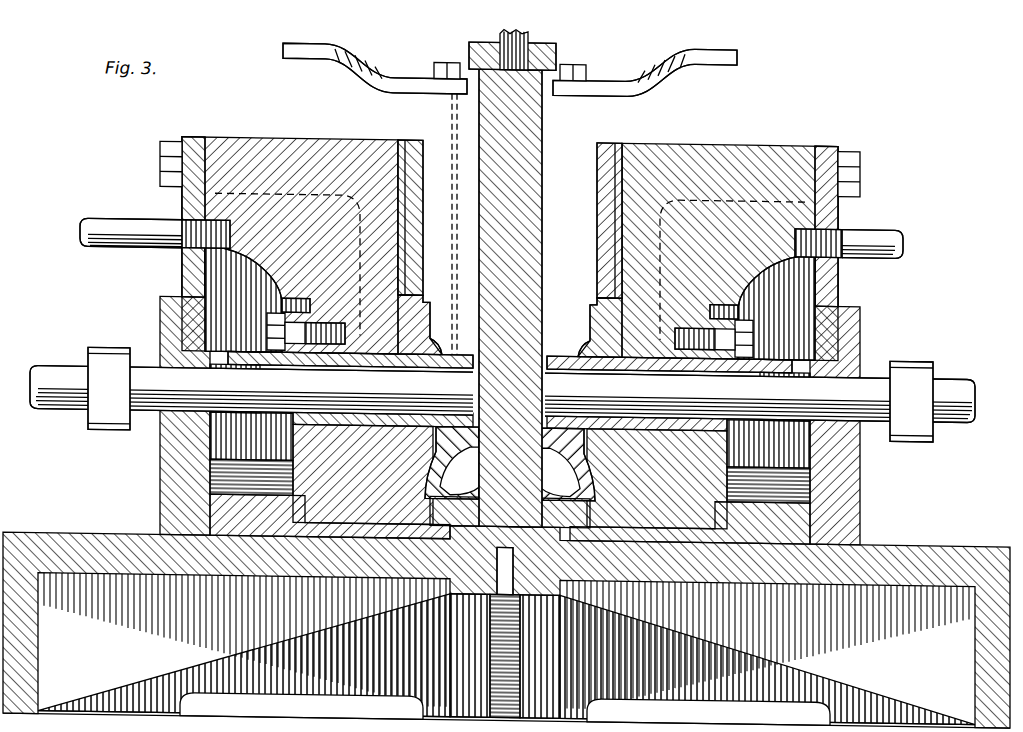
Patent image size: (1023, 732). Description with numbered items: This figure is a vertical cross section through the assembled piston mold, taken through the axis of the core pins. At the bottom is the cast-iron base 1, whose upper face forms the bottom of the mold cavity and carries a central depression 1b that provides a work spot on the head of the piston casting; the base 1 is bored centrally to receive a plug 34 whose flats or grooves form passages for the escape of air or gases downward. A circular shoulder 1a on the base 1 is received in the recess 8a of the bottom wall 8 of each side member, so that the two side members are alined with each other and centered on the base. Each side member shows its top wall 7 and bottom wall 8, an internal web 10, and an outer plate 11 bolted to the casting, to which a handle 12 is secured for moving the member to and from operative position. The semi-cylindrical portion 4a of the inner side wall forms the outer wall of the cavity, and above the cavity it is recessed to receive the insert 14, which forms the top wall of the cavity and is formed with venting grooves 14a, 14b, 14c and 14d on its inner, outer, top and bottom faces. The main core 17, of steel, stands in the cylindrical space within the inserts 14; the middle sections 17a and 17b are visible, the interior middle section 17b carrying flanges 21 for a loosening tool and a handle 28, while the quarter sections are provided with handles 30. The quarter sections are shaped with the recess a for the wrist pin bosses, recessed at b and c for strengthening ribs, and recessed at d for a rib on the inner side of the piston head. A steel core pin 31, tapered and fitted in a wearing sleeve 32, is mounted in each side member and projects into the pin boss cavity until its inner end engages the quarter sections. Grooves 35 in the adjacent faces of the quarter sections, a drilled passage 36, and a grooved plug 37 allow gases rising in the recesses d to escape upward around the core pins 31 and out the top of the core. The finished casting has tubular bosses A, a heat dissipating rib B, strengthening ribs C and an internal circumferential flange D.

The base 1 is at (56, 540).
The circular shoulder 1a is at (650, 540).
The central depression 1b is at (535, 560).
The semi-cylindrical portion 4a is at (345, 262).
The top wall 7 is at (283, 145).
The bottom wall 8 is at (830, 516).
The recess 8a is at (290, 510).
The internal web 10 is at (510, 298).
The plate 11 is at (160, 460).
The handle 12 is at (100, 224).
The insert 14 is at (430, 228).
The groove on inner face of insert 14a is at (430, 185).
The groove on outer face of insert 14b is at (506, 188).
The groove on top face of insert 14c is at (405, 134).
The groove on bottom face of insert 14d is at (405, 302).
The main core 17 is at (592, 130).
The middle core section 17a is at (420, 98).
The interior middle core section 17b is at (534, 145).
The flange 21 is at (452, 56).
The handle 28 is at (528, 36).
The handle 30 is at (298, 46).
The core pin 31 is at (136, 360).
The wearing sleeve 32 is at (510, 469).
The plug 34 is at (496, 563).
The groove 35 is at (497, 467).
The passage 36 is at (452, 114).
The grooved plug 37 is at (448, 340).
The tubular boss A is at (462, 348).
The heat dissipating rib B is at (592, 504).
The strengthening rib C is at (502, 455).
The internal circumferential flange D is at (612, 340).
The recess a is at (582, 345).
The recess b is at (381, 441).
The recess c is at (494, 475).
The recess d is at (504, 552).